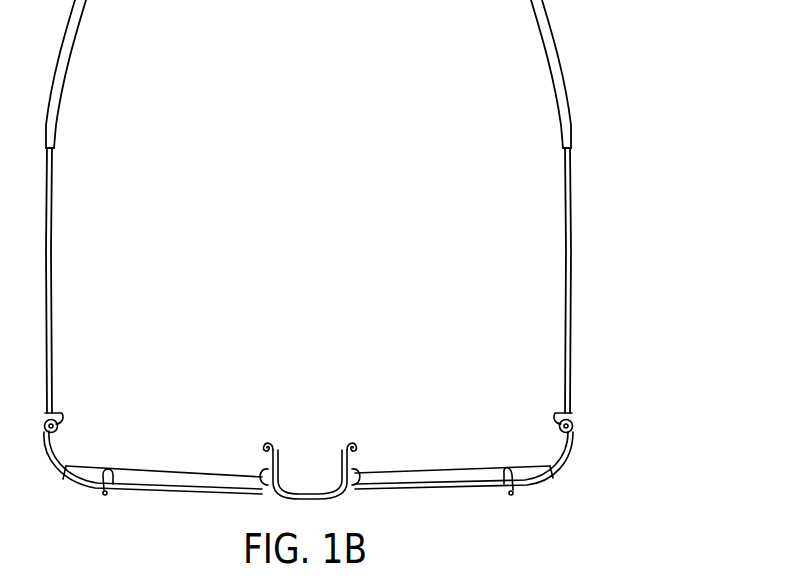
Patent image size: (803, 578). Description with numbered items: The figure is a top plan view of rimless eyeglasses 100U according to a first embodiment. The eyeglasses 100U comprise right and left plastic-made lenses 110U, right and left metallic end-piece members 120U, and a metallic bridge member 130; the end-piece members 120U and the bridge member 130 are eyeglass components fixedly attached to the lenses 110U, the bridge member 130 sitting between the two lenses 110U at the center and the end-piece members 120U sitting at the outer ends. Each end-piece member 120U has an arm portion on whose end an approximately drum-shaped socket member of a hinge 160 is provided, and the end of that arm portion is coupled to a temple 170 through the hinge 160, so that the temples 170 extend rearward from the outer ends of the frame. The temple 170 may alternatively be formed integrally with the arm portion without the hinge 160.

The rimless eyeglasses 100U is at (373, 249).
The temple 170 is at (561, 183).
The hinge 160 is at (62, 411).
The lens 110U is at (172, 480).
The end-piece member 120U is at (582, 449).
The bridge member 130 is at (304, 486).